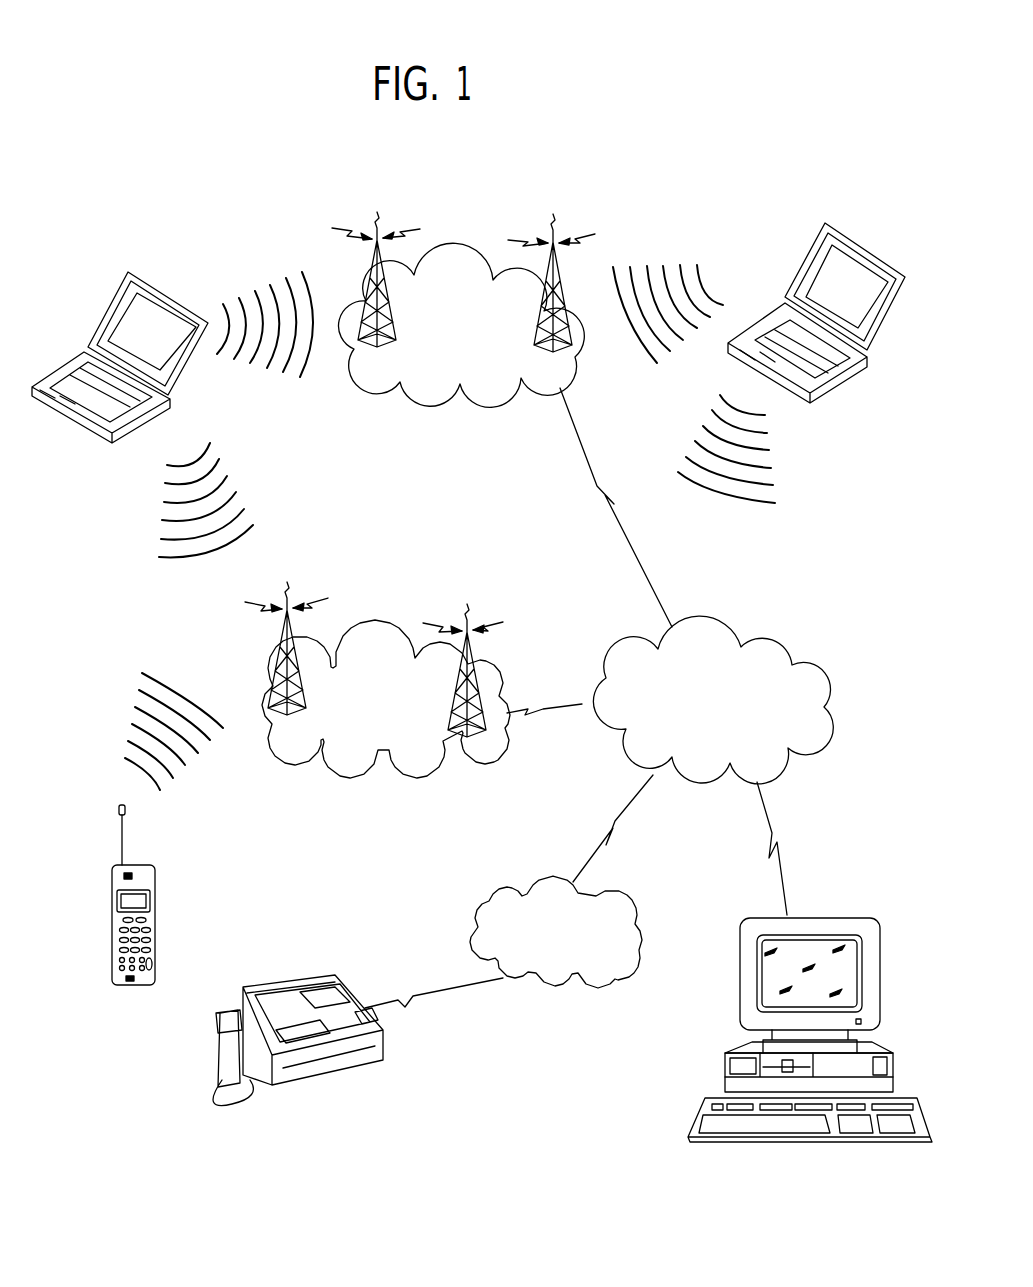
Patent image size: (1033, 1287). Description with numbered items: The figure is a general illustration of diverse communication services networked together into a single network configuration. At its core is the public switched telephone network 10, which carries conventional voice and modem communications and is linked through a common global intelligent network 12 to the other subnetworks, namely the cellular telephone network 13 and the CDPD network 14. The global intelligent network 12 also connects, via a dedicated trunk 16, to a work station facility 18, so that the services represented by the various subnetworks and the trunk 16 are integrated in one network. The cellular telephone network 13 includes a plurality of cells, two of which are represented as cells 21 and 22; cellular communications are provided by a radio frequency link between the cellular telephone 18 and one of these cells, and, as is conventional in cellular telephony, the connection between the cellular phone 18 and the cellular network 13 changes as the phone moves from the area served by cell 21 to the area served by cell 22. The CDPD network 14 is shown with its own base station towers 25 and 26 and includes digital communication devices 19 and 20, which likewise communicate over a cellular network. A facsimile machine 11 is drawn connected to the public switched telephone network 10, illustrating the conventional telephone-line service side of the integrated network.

The public switched telephone network 10 is at (582, 987).
The facsimile machine 11 is at (335, 1067).
The common global intelligent network 12 is at (772, 640).
The cellular telephone network 13 is at (400, 632).
The CDPD network 14 is at (482, 252).
The trunk 16 is at (782, 842).
The work station facility / cellular telephone 18 is at (158, 890).
The digital communication device 19 is at (110, 315).
The digital communication device 20 is at (863, 248).
The cell 21 is at (247, 602).
The cell 22 is at (503, 622).
The CDPD base station tower 25 is at (338, 228).
The CDPD base station tower 26 is at (578, 242).